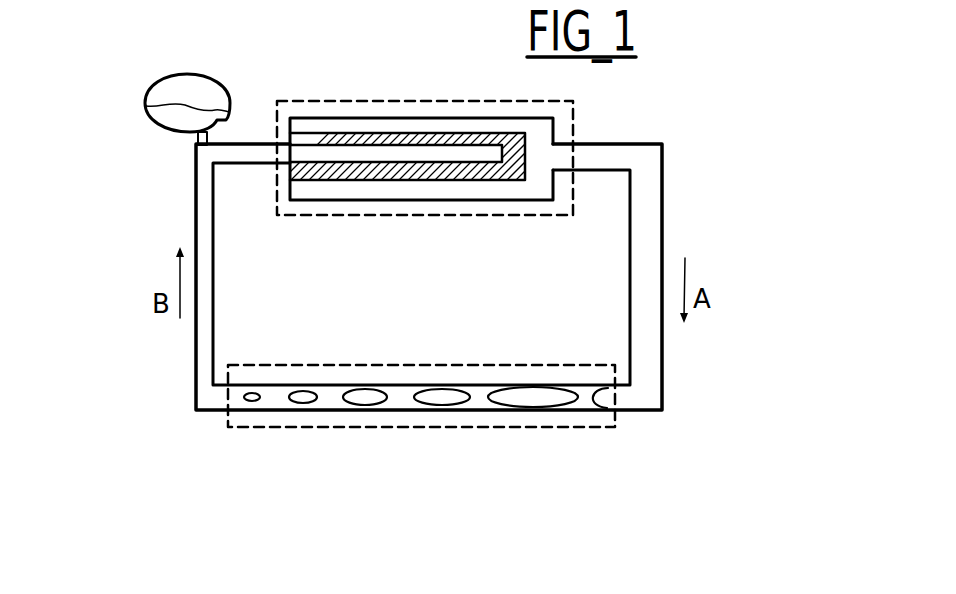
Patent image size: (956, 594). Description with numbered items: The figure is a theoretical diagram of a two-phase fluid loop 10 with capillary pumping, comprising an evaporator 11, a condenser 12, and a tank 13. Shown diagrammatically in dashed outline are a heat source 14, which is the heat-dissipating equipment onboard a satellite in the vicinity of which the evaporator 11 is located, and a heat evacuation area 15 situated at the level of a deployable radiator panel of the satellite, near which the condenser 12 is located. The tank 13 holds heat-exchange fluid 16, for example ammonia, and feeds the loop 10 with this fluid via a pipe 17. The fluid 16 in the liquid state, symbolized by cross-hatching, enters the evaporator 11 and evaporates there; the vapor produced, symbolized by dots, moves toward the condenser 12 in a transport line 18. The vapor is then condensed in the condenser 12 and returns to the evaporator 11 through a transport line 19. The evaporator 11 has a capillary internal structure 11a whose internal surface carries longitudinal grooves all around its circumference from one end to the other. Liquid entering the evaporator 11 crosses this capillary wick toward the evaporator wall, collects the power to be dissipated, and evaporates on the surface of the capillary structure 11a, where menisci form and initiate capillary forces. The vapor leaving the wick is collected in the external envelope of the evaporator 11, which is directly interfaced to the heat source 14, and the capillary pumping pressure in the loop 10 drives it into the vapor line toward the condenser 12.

The two-phase fluid loop 10 is at (745, 99).
The evaporator 11 is at (360, 114).
The capillary internal structure 11a is at (424, 129).
The condenser 12 is at (371, 418).
The tank 13 is at (145, 86).
The heat source 14 is at (298, 96).
The heat evacuation area 15 is at (275, 433).
The heat-exchange fluid 16 is at (160, 123).
The pipe 17 is at (191, 141).
The transport line 18 is at (666, 222).
The transport line 19 is at (192, 233).